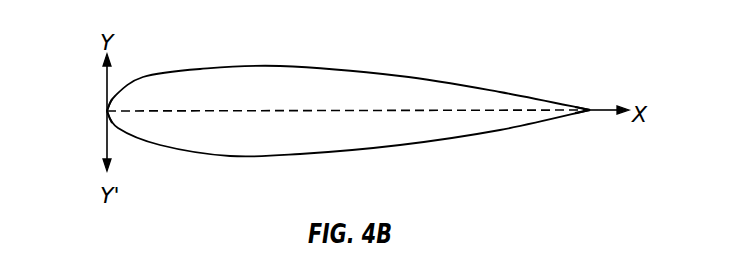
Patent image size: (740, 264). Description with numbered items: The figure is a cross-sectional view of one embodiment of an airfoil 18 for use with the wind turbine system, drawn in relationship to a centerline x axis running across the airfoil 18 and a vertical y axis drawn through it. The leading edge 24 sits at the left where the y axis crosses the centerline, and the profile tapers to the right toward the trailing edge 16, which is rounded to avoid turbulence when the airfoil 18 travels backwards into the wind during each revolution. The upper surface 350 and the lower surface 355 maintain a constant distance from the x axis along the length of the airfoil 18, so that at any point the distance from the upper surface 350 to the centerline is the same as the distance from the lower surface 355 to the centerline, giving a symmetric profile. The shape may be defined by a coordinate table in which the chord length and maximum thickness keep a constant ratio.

The trailing edge 16 is at (591, 108).
The airfoil 18 is at (348, 117).
The leading edge 24 is at (107, 111).
The upper surface 350 is at (290, 67).
The lower surface 355 is at (287, 155).